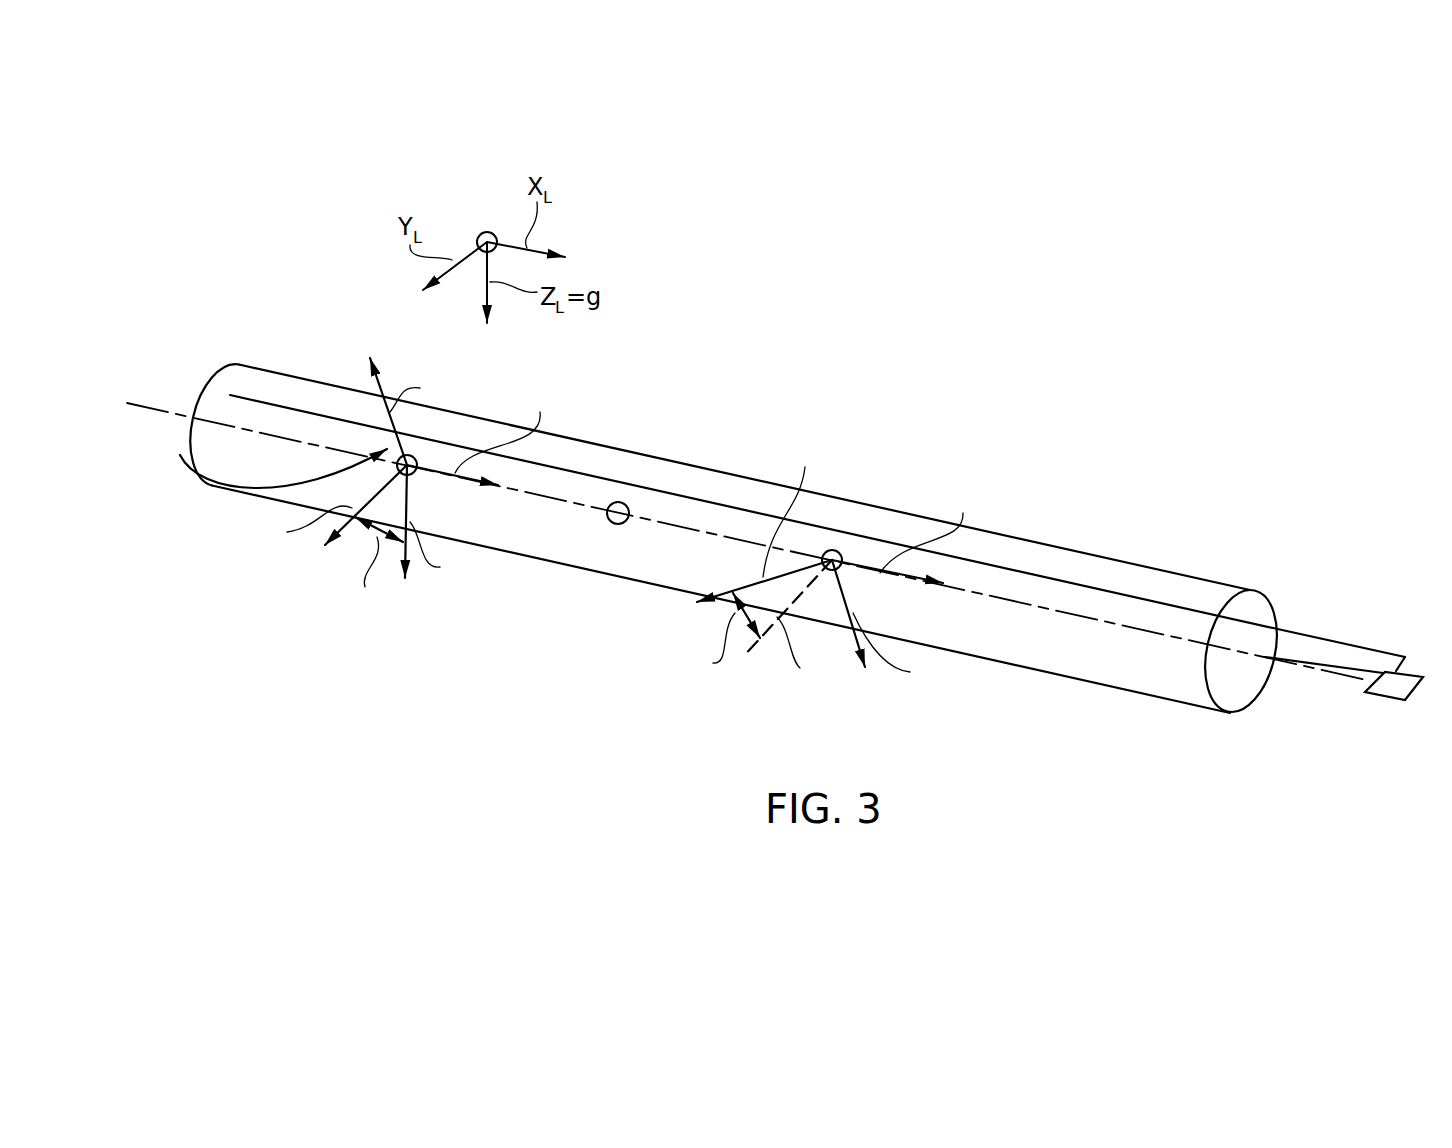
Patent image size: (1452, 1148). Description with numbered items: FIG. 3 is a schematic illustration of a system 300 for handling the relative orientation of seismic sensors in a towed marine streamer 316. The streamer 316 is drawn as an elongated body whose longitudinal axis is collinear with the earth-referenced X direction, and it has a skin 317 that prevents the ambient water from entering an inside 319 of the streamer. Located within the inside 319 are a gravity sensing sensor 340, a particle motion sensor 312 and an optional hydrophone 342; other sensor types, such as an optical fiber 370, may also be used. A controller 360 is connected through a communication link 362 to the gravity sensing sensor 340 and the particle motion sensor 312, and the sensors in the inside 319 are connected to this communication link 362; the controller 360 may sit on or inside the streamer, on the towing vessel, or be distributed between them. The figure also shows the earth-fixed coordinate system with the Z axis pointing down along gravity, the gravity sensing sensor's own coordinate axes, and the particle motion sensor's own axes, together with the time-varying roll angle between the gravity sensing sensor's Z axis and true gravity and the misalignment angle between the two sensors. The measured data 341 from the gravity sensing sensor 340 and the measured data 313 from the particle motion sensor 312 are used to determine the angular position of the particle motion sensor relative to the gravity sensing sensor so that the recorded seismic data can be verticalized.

The system 300 is at (980, 347).
The particle motion sensor 312 is at (843, 526).
The measured data 313 is at (834, 537).
The streamer 316 is at (1040, 540).
The skin 317 is at (1000, 666).
The inside 319 is at (732, 522).
The gravity sensing sensor 340 is at (413, 459).
The measured data 341 is at (261, 464).
The hydrophone 342 is at (618, 502).
The controller 360 is at (1413, 673).
The communication link 362 is at (1287, 662).
The optical fiber 370 is at (1305, 630).